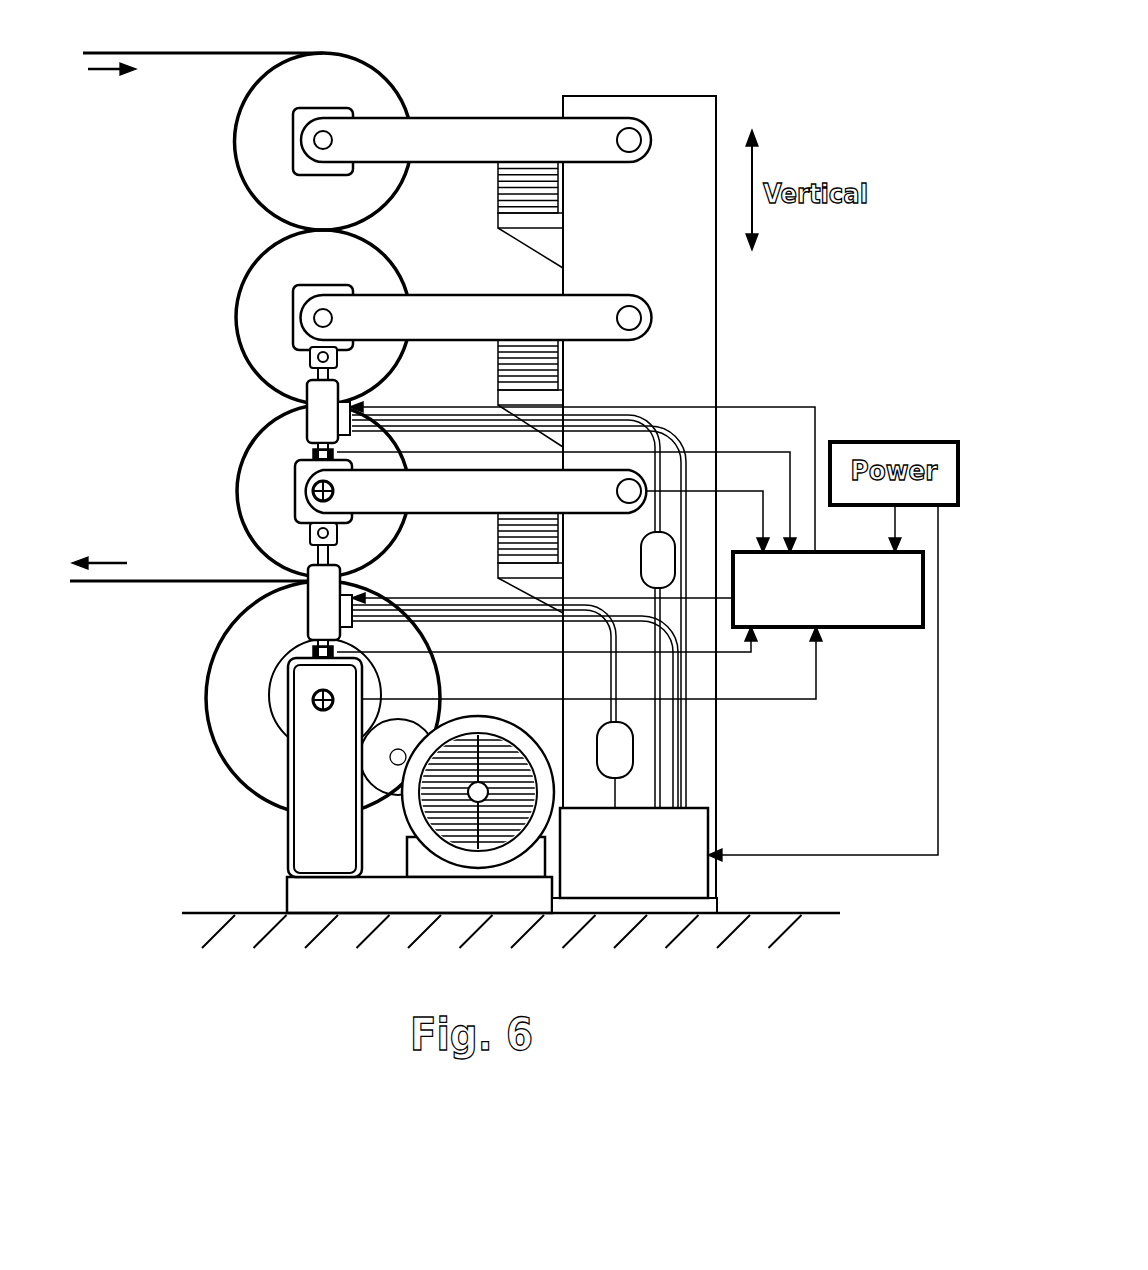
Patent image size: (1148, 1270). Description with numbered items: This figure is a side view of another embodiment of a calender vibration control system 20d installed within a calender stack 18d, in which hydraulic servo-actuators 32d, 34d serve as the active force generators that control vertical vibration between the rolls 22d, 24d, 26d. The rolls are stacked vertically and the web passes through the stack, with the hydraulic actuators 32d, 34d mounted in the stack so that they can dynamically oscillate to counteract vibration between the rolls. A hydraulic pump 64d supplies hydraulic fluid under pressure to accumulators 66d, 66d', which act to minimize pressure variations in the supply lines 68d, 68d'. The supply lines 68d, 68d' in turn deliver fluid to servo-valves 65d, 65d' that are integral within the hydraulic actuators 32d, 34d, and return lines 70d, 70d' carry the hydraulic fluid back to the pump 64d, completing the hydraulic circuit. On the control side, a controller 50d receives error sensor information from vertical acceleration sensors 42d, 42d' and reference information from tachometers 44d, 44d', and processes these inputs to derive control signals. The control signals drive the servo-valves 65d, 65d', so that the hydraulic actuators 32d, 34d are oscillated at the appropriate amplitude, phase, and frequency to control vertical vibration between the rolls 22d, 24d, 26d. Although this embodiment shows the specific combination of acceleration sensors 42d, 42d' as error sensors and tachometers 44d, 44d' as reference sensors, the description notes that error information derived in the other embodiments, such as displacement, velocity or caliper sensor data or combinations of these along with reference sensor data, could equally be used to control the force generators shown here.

The calender stack 18d is at (643, 95).
The calender vibration control system 20d is at (785, 398).
The roll 22d is at (212, 756).
The roll 24d is at (238, 500).
The roll 26d is at (393, 244).
The hydraulic servo-actuator 32d is at (305, 618).
The hydraulic servo-actuator 34d is at (322, 420).
The vertical acceleration sensor 42d is at (237, 642).
The vertical acceleration sensor 42d' is at (243, 440).
The tachometer 44d is at (280, 767).
The tachometer 44d' is at (470, 510).
The controller 50d is at (843, 627).
The hydraulic pump 64d is at (712, 822).
The servo-valve 65d is at (405, 599).
The servo-valve 65d' is at (404, 404).
The accumulator 66d is at (570, 739).
The accumulator 66d' is at (622, 560).
The supply line 68d is at (484, 706).
The supply line 68d' is at (533, 571).
The return line 70d is at (578, 712).
The return line 70d' is at (570, 571).